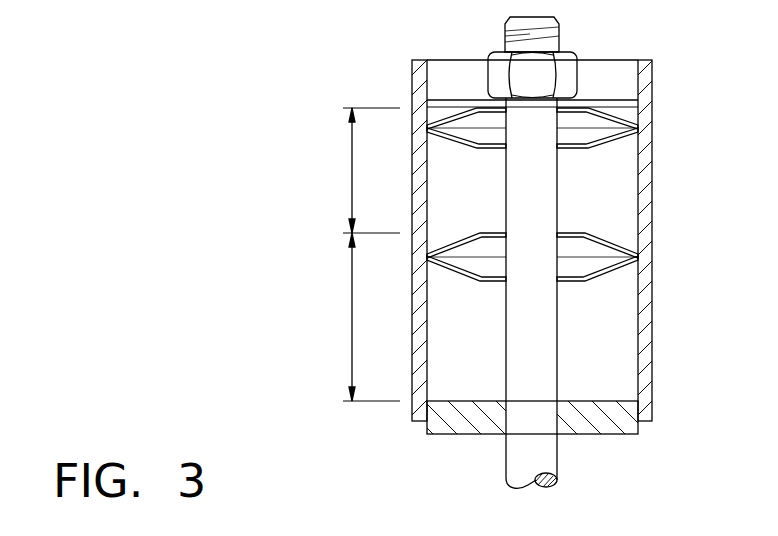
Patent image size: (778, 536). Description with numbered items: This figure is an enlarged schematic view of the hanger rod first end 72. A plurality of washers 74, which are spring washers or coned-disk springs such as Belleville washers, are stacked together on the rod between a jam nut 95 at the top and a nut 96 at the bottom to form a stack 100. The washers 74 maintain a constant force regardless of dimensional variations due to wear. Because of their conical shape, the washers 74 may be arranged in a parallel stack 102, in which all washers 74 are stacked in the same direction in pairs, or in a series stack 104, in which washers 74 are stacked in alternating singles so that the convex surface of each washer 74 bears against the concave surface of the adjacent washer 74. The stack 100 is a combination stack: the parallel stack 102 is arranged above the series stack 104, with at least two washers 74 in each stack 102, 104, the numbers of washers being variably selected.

The hanger rod first end 72 is at (238, 64).
The washers 74 is at (616, 167).
The jam nut 95 is at (567, 71).
The nut 96 is at (622, 430).
The stack 100 is at (238, 197).
The parallel stack 102 is at (352, 313).
The series stack 104 is at (352, 170).